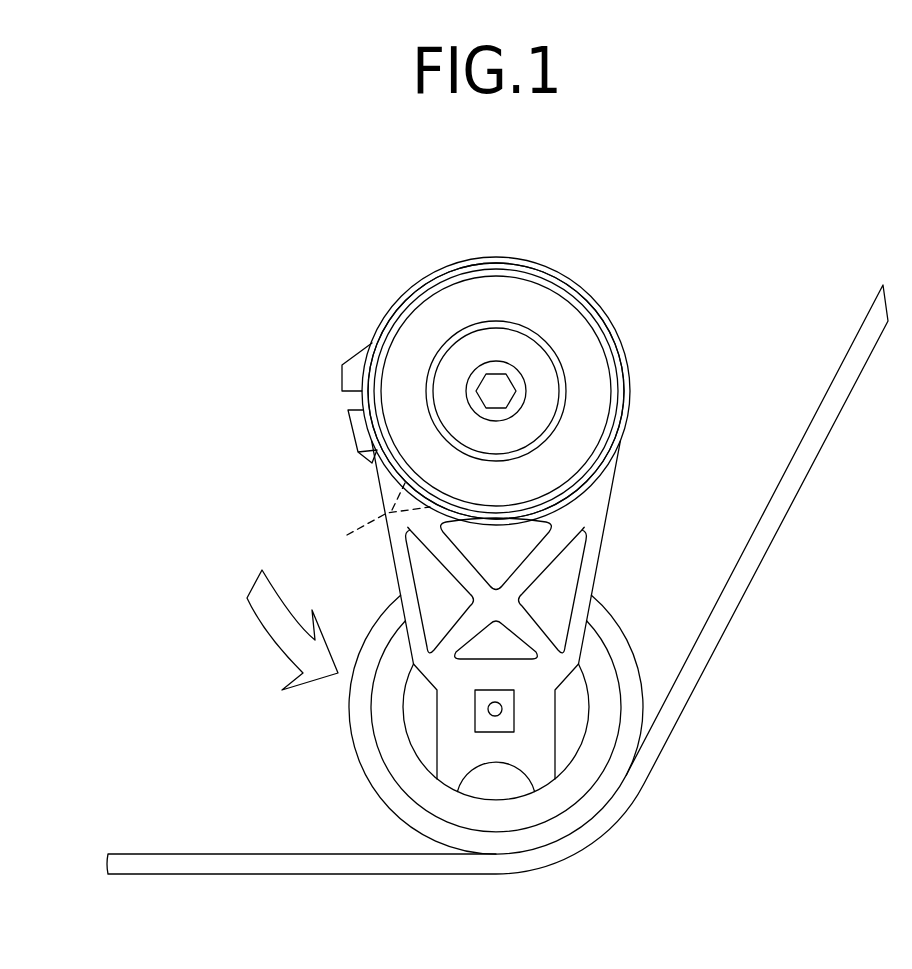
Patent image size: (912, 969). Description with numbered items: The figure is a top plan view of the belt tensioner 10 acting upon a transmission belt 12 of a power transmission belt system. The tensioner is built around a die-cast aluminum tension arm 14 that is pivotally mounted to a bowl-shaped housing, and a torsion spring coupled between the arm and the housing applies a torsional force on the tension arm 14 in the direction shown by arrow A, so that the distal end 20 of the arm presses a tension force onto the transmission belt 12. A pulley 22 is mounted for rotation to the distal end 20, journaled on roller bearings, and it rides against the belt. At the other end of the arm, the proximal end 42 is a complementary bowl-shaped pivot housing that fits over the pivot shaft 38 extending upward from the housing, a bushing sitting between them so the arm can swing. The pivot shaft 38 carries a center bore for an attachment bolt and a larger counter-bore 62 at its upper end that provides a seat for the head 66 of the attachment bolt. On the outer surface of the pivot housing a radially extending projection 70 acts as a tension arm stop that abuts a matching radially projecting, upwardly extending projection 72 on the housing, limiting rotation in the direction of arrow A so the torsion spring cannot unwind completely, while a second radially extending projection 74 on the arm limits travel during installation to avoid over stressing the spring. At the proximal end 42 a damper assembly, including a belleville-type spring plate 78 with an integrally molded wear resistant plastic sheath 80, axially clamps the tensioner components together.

The belt tensioner 10 is at (218, 457).
The transmission belt 12 is at (773, 510).
The tension arm 14 is at (583, 518).
The distal end 20 is at (363, 795).
The pulley 22 is at (605, 630).
The pivot shaft 38 is at (479, 321).
The proximal end 42 is at (632, 350).
The counter-bore 62 is at (553, 374).
The head 66 is at (498, 387).
The projection 70 is at (348, 368).
The projection 72 is at (352, 432).
The second radially extending projection 74 is at (373, 523).
The spring plate 78 is at (436, 323).
The sheath 80 is at (388, 320).
The arrow A is at (285, 637).